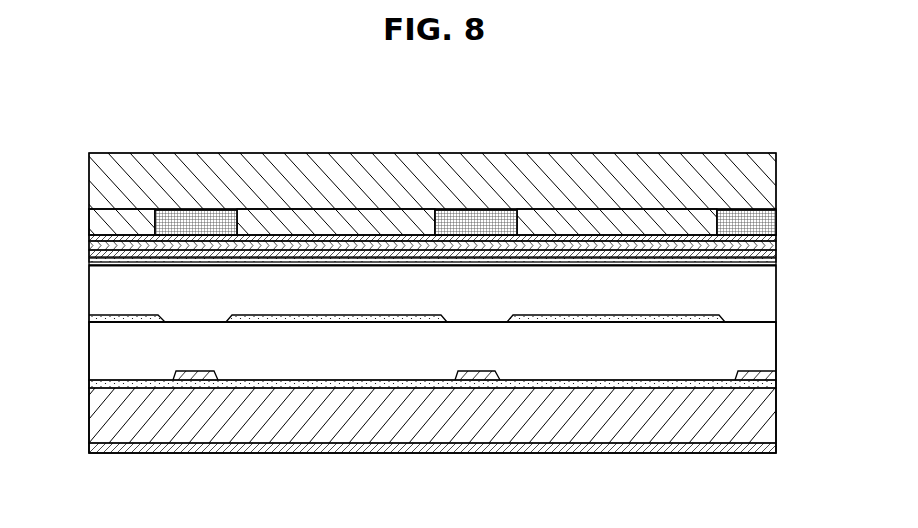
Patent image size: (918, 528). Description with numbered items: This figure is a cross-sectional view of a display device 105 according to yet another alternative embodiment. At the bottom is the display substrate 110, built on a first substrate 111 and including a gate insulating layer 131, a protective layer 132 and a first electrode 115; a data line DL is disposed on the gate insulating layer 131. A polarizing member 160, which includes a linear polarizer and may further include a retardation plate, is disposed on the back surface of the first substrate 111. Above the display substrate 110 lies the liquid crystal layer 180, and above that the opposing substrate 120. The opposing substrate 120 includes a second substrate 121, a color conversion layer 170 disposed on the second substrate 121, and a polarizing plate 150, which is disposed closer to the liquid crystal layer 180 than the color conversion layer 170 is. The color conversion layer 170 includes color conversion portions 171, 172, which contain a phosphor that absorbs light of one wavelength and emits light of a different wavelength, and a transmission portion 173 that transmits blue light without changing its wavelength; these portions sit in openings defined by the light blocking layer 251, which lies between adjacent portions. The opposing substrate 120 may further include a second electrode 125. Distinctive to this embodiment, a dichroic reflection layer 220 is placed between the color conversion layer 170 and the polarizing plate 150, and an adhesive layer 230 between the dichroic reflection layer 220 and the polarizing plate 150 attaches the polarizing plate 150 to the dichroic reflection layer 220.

The display device 105 is at (101, 102).
The display substrate 110 is at (782, 322).
The first substrate 111 is at (98, 416).
The first electrode 115 is at (89, 320).
The opposing substrate 120 is at (782, 153).
The second substrate 121 is at (484, 183).
The second electrode 125 is at (89, 262).
The gate insulating layer 131 is at (98, 384).
The protective layer 132 is at (98, 352).
The polarizing plate 150 is at (89, 253).
The polarizing member 160 is at (92, 448).
The color conversion layer 170 is at (88, 218).
The color conversion portion 171 is at (278, 220).
The color conversion portion 172 is at (612, 220).
The transmission portion 173 is at (119, 220).
The liquid crystal layer 180 is at (98, 293).
The dichroic reflection layer 220 is at (335, 238).
The adhesive layer 230 is at (373, 248).
The light blocking layer 251 is at (199, 220).
The data line DL is at (195, 377).